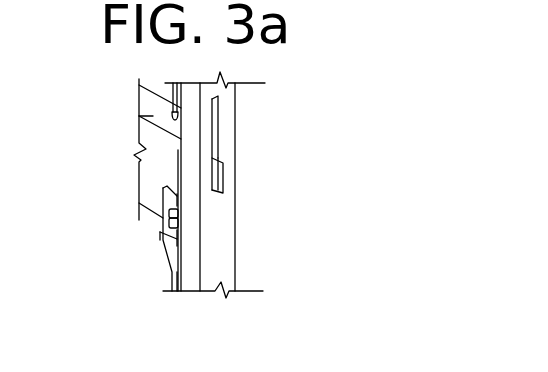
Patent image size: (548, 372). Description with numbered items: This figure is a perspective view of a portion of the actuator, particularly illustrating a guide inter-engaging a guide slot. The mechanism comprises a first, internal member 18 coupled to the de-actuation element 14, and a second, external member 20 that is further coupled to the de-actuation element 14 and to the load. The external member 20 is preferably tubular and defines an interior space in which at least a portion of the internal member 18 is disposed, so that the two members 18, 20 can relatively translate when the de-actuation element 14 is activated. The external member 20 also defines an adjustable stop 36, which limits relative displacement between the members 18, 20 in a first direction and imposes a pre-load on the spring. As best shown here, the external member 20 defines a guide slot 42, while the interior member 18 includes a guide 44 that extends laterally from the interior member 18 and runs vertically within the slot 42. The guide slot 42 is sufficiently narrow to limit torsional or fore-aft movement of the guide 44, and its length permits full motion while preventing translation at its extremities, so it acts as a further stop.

The de-actuation element 14 is at (172, 104).
The first member 18 is at (166, 130).
The second member 20 is at (236, 232).
The adjustable stop 36 is at (150, 227).
The guide slot 42 is at (218, 115).
The guide 44 is at (223, 180).